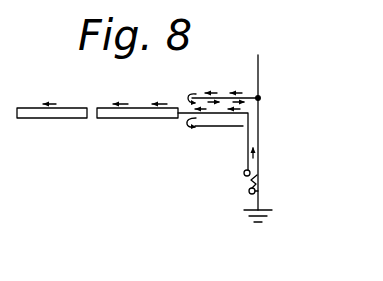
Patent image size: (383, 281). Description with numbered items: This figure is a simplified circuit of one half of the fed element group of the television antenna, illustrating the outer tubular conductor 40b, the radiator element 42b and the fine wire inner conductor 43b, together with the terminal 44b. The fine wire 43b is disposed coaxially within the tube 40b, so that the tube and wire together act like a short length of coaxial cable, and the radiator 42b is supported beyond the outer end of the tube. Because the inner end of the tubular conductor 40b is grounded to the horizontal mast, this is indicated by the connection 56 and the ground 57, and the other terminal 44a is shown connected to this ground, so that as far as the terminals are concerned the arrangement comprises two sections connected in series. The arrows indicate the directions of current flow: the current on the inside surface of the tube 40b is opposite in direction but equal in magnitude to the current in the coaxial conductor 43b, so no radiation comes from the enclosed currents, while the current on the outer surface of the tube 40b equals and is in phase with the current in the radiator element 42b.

The tubular conductor 40b is at (257, 97).
The radiator element 42b is at (77, 119).
The fine wire conductor 43b is at (178, 121).
The terminal 44a is at (249, 192).
The terminal 44b is at (244, 175).
The connection 56 is at (260, 118).
The ground 57 is at (266, 210).